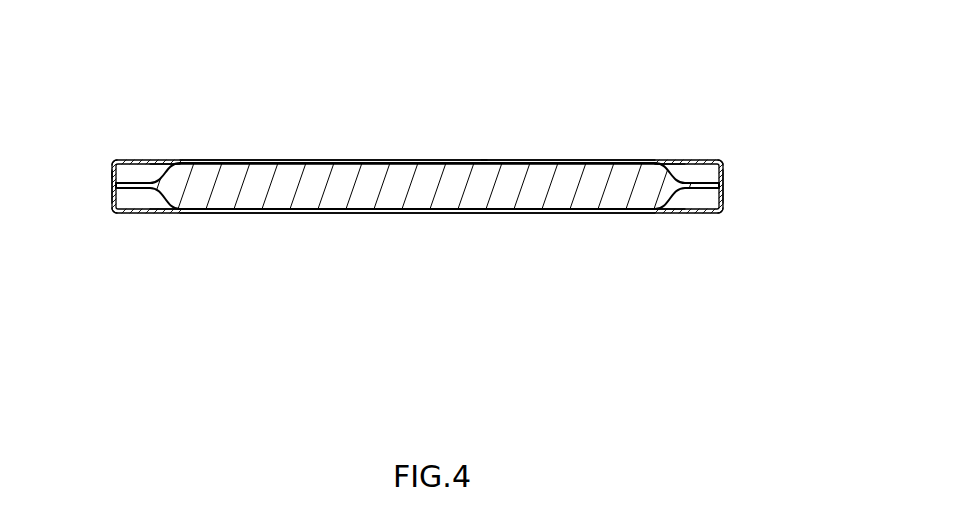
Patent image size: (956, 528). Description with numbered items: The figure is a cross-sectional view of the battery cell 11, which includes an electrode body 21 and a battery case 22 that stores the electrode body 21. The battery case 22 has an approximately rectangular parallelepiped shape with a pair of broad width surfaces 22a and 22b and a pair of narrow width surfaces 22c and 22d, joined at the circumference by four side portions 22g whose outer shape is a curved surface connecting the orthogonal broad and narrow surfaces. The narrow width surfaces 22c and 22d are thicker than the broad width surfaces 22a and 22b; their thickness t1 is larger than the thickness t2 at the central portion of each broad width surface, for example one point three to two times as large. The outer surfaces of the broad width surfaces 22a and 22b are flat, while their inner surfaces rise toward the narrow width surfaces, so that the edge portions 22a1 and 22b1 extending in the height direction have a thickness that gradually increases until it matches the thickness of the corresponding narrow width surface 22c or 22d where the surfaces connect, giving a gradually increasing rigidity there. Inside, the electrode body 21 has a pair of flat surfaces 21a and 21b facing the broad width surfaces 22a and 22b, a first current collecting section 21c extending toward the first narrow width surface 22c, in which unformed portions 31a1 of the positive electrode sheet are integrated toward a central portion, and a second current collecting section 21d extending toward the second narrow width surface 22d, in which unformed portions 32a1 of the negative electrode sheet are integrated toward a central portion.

The battery cell 11 is at (255, 85).
The electrode body 21 is at (340, 219).
The flat surface 21a is at (393, 159).
The flat surface 21b is at (393, 216).
The first current collecting section 21c is at (152, 181).
The second current collecting section 21d is at (705, 181).
The battery case 22 is at (614, 156).
The broad width surface 22a is at (541, 160).
The broad width surface 22b is at (541, 215).
The narrow width surface 22c is at (111, 193).
The narrow width surface 22d is at (726, 192).
The side portion 22g is at (113, 160).
The edge portion 22a1 is at (151, 166).
The edge portion 22b1 is at (148, 204).
The unformed portion 31a1 is at (136, 190).
The unformed portion 32a1 is at (701, 190).
The thickness of the narrow width surfaces t1 is at (150, 175).
The thickness of the broad width surfaces t2 is at (484, 186).